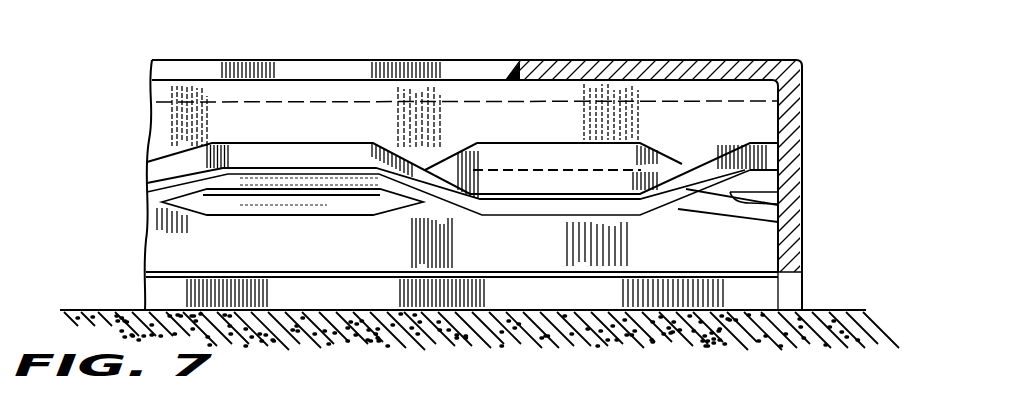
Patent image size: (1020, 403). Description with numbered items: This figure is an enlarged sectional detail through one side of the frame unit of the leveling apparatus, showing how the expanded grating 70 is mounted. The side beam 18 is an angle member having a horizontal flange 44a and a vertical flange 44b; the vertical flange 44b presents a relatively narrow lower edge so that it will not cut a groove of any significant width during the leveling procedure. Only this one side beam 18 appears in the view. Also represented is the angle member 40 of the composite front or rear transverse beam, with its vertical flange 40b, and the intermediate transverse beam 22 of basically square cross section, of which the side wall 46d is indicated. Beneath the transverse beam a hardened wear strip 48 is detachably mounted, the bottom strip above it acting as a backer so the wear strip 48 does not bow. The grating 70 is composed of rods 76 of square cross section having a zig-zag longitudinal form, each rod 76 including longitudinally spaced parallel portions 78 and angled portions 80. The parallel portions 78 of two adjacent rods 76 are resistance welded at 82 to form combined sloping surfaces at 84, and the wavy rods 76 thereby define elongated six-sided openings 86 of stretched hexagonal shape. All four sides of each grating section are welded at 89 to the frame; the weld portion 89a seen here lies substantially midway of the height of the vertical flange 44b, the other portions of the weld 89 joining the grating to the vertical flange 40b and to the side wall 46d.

The side beam 18 is at (814, 91).
The intermediate transverse beam 22 is at (139, 120).
The angle member 40 is at (146, 47).
The vertical flange 40b is at (333, 61).
The horizontal flange 44a is at (600, 62).
The vertical flange 44b is at (802, 240).
The side wall 46d is at (157, 247).
The wear strip 48 is at (363, 288).
The expanded grating 70 is at (418, 216).
The rod 76 is at (254, 206).
The parallel portion 78 is at (310, 153).
The angled portion 80 is at (407, 152).
The resistance weld 82 is at (567, 172).
The combined sloping surface 84 is at (534, 146).
The six-sided opening 86 is at (290, 190).
The weld 89 is at (768, 137).
The weld portion 89a is at (777, 197).